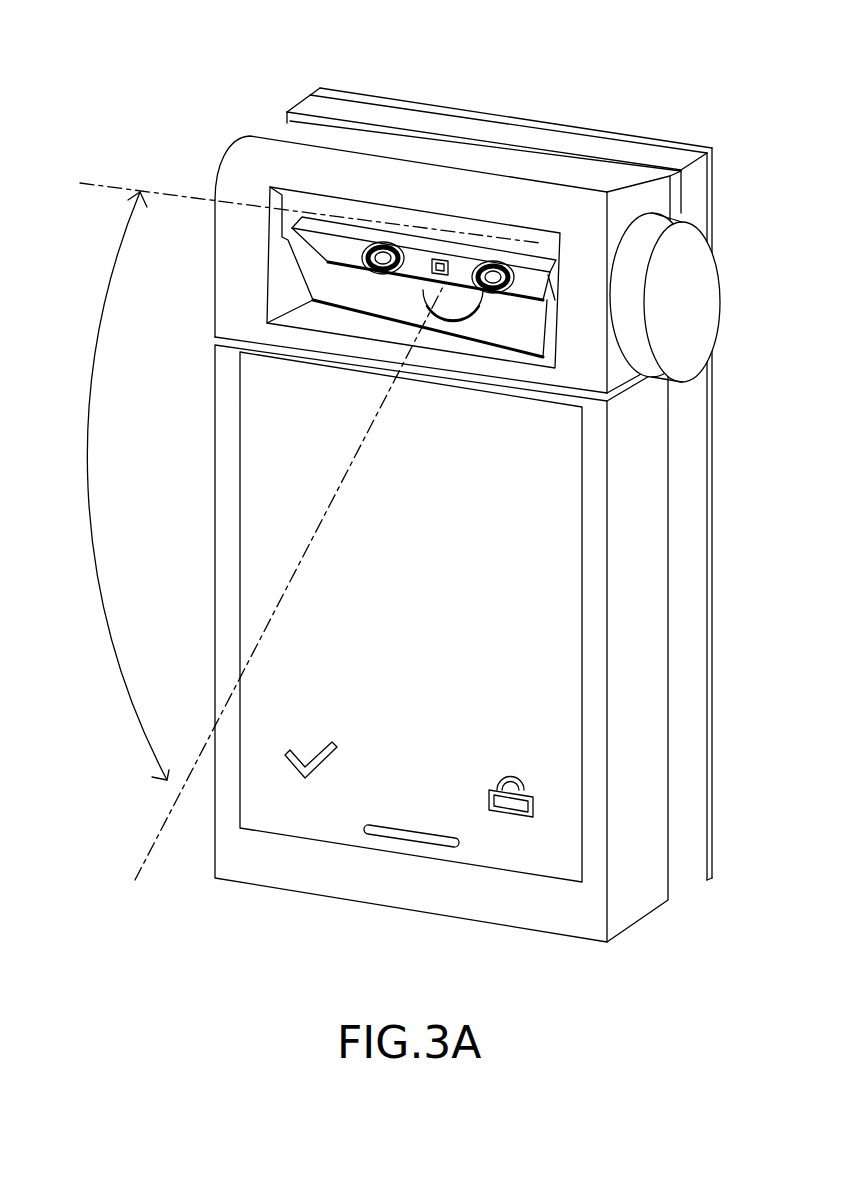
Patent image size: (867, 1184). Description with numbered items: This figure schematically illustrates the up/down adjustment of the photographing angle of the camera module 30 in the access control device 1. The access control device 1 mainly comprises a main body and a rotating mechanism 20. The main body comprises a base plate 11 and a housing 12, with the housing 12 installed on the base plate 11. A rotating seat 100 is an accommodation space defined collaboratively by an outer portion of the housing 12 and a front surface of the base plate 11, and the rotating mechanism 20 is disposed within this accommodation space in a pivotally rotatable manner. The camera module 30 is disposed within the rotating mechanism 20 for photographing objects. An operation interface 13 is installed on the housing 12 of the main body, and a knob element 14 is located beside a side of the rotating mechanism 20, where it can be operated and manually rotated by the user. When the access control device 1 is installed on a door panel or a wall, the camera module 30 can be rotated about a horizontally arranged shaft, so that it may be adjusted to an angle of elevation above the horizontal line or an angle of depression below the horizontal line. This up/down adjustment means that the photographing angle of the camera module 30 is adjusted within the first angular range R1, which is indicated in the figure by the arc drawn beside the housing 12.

The access control device 1 is at (297, 41).
The rotating seat 100 is at (590, 163).
The base plate 11 is at (697, 678).
The housing 12 is at (380, 883).
The operation interface 13 is at (327, 808).
The knob element 14 is at (702, 293).
The rotating mechanism 20 is at (277, 133).
The camera module 30 is at (463, 264).
The first angular range R1 is at (109, 486).